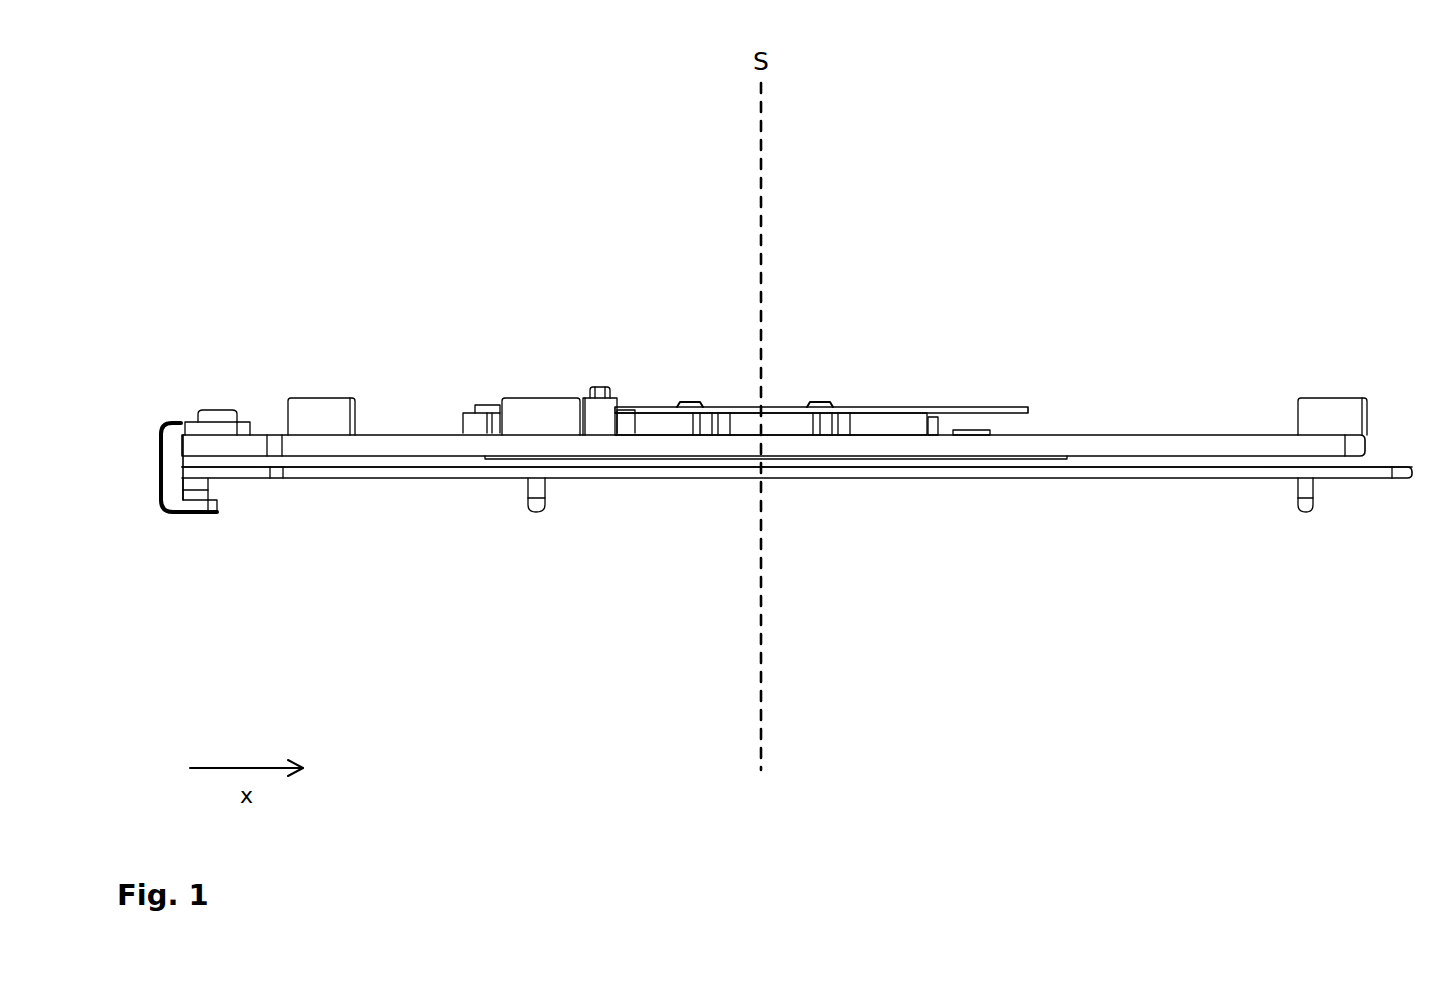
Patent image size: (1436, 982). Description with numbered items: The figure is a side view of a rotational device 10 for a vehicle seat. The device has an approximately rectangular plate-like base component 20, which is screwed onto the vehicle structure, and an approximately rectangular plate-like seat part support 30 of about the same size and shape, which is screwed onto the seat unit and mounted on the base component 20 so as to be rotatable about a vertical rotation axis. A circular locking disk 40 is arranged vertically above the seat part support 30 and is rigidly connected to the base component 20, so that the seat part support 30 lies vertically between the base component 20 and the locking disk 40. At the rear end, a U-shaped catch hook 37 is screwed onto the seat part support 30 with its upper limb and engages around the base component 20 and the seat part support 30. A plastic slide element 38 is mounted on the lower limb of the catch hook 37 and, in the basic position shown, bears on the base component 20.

The rotational device 10 is at (204, 102).
The base component 20 is at (1012, 472).
The seat part support 30 is at (1112, 440).
The catch hook 37 is at (180, 437).
The slide element 38 is at (205, 482).
The locking disk 40 is at (885, 427).